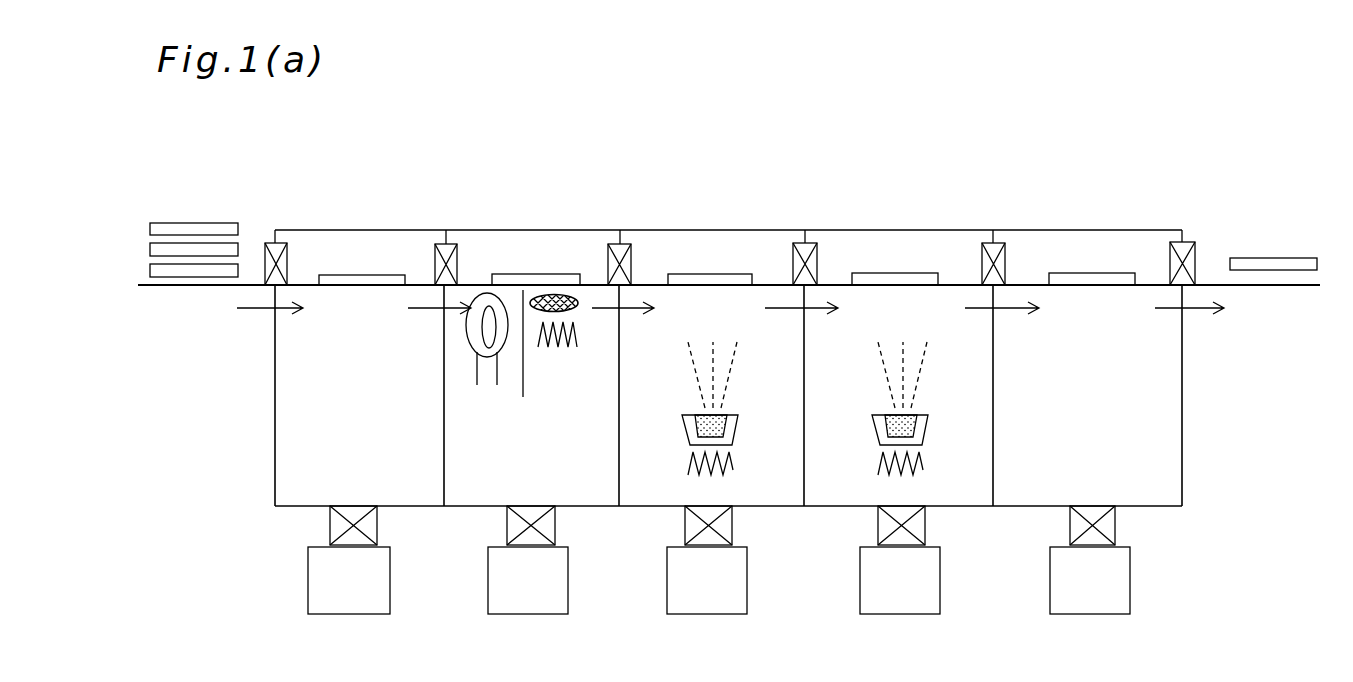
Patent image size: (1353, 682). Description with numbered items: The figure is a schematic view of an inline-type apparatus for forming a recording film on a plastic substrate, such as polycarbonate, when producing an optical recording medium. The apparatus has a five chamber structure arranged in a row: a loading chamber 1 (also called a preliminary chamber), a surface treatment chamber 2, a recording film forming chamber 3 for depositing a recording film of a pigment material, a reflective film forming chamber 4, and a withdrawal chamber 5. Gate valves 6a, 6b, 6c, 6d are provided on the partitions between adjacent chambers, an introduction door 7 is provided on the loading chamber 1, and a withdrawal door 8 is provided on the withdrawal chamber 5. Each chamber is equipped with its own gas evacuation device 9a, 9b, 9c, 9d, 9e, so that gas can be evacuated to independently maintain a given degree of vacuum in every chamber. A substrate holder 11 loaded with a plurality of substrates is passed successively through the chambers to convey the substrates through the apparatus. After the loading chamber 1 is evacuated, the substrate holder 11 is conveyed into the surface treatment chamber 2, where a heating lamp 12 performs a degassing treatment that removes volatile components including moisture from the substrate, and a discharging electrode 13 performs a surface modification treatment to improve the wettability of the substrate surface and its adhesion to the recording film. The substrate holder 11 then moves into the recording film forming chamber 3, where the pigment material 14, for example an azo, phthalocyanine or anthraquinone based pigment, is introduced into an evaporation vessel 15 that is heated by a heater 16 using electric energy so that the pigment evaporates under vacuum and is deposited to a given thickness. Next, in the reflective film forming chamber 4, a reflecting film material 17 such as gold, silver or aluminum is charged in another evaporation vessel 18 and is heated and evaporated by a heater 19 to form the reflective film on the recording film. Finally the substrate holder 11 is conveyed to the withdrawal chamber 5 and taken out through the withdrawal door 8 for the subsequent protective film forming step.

The loading chamber 1 is at (378, 248).
The surface treatment chamber 2 is at (537, 245).
The recording film forming chamber 3 is at (702, 245).
The reflective film forming chamber 4 is at (893, 245).
The withdrawal chamber 5 is at (1080, 250).
The gate valve 6a is at (449, 248).
The gate valve 6b is at (625, 248).
The gate valve 6c is at (810, 250).
The gate valve 6d is at (998, 250).
The introduction door 7 is at (282, 248).
The withdrawal door 8 is at (1185, 247).
The gas evacuation device 9a is at (360, 580).
The gas evacuation device 9b is at (542, 592).
The gas evacuation device 9c is at (718, 597).
The gas evacuation device 9d is at (912, 605).
The gas evacuation device 9e is at (1105, 598).
The substrate holder 11 is at (210, 230).
The heating lamp 12 is at (486, 375).
The discharging electrode 13 is at (558, 357).
The pigment material 14 is at (725, 418).
The evaporation vessel 15 is at (692, 432).
The heater 16 is at (733, 465).
The reflecting film material 17 is at (915, 418).
The evaporation vessel 18 is at (882, 432).
The heater 19 is at (923, 465).